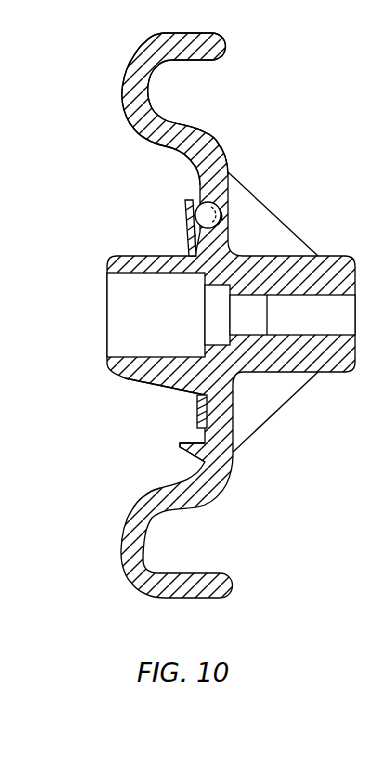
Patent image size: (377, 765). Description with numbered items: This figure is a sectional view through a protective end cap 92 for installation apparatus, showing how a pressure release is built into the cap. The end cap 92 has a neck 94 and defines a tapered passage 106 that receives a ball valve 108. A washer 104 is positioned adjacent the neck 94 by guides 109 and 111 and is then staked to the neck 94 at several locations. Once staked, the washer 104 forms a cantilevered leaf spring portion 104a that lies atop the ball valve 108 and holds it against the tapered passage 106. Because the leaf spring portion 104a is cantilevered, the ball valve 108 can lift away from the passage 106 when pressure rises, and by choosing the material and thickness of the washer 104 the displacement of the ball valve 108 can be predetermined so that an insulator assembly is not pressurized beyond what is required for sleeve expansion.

The end cap 92 is at (122, 88).
The neck 94 is at (106, 366).
The ball valve 108 is at (202, 204).
The tapered passage 106 is at (222, 222).
The cantilevered leaf spring portion 104a is at (185, 213).
The guide 111 is at (196, 393).
The washer 104 is at (197, 412).
The guide 109 is at (180, 440).